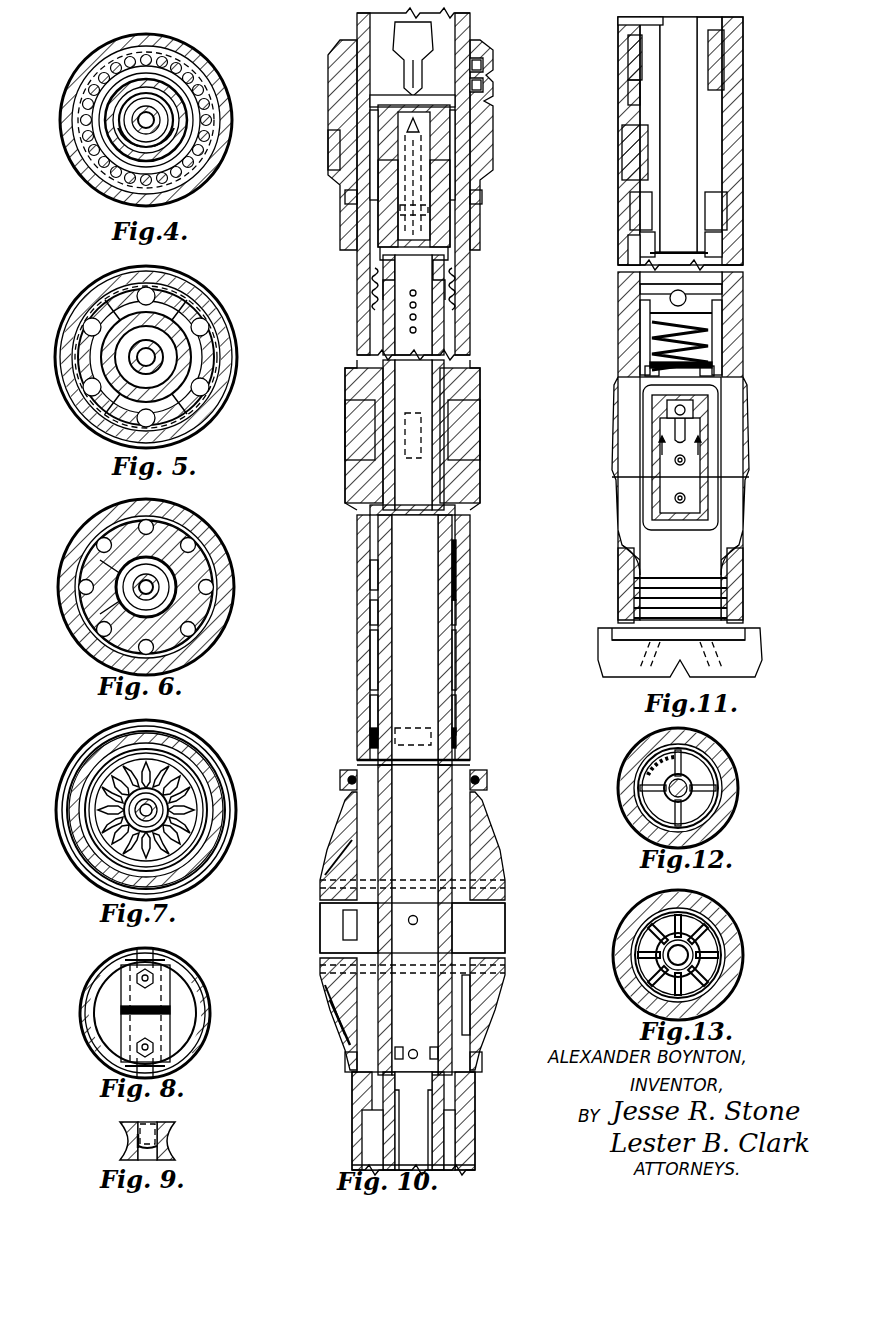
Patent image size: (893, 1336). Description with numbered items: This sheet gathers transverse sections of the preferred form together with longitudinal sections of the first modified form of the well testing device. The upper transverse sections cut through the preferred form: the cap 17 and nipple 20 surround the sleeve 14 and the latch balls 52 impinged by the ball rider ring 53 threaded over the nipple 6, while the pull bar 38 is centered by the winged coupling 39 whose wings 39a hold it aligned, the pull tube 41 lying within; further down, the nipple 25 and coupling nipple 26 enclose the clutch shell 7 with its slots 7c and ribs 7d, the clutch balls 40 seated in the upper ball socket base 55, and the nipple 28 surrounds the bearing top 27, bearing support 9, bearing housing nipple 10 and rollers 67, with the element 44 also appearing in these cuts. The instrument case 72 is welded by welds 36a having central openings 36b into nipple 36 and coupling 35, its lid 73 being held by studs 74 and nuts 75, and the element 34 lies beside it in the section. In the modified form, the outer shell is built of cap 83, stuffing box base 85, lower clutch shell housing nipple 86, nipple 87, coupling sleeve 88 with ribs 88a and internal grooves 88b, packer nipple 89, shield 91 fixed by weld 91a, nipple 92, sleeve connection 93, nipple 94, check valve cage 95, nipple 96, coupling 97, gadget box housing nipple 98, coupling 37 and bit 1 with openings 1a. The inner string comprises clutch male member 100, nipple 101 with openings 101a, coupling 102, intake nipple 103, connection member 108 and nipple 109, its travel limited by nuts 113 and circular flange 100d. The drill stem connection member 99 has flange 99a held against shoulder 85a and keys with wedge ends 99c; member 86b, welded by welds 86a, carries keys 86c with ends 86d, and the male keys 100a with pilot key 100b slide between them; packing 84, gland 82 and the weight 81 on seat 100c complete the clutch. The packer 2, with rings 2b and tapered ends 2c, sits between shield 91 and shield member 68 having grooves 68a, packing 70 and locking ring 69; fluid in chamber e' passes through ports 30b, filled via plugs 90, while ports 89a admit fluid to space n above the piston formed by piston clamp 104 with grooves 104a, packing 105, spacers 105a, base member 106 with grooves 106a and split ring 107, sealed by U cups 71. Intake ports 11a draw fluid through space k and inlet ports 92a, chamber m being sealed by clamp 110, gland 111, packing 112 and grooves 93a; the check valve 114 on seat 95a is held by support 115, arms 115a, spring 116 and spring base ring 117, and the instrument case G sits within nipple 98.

In FIG. 11, the bit 1 is at (612, 652).
In FIG. 11, the openings of the bit 1a is at (715, 657).
In FIG. 10, the packer 2 is at (490, 928).
In FIG. 10, the reinforcing rings 2b is at (498, 883).
In FIG. 10, the tapered ends of the packer 2c is at (340, 866).
In FIG. 4, the nipple 6 is at (182, 142).
In FIG. 5, the clutch shell 7 is at (185, 340).
In FIG. 6, the clutch shell 7 is at (196, 547).
In FIG. 5, the slots 7c is at (208, 357).
In FIG. 5, the ribs 7d is at (205, 378).
In FIG. 11, the bearing support 9 is at (683, 437).
In FIG. 7, the bearing housing nipple 10 is at (192, 762).
In FIG. 10, the intake ports 11a is at (440, 1054).
In FIG. 4, the sleeve 14 is at (219, 158).
In FIG. 4, the cap 17 is at (118, 56).
In FIG. 4, the nipple 20 is at (210, 180).
In FIG. 5, the nipple 25 is at (190, 310).
In FIG. 5, the coupling nipple 26 is at (200, 405).
In FIG. 6, the coupling nipple 26 is at (225, 592).
In FIG. 7, the coupling nipple 26 is at (222, 843).
In FIG. 7, the bearing top 27 is at (108, 768).
In FIG. 7, the nipple 28 is at (212, 813).
In FIG. 10, the ports 30b is at (343, 928).
In FIG. 8, the hatched crescent 34 is at (95, 1009).
In FIG. 8, the coupling 35 is at (82, 988).
In FIG. 9, the coupling 35 is at (168, 1128).
In FIG. 9, the nipple 36 is at (120, 1145).
In FIG. 8, the welds 36a is at (120, 963).
In FIG. 9, the welds 36a is at (172, 1138).
In FIG. 8, the central openings 36b is at (160, 955).
In FIG. 9, the central openings 36b is at (122, 1136).
In FIG. 11, the coupling 37 is at (728, 581).
In FIG. 4, the pull bar 38 is at (106, 154).
In FIG. 7, the pull bar 38 is at (130, 820).
In FIG. 4, the winged coupling 39 is at (213, 78).
In FIG. 7, the winged coupling 39 is at (125, 800).
In FIG. 4, the wings 39a is at (112, 86).
In FIG. 6, the clutch balls 40 is at (196, 627).
In FIG. 4, the pull tube 41 is at (142, 124).
In FIG. 5, the pull tube 41 is at (140, 350).
In FIG. 6, the pull tube 41 is at (118, 608).
In FIG. 7, the pull tube 41 is at (90, 866).
In FIG. 5, the spoke 44 is at (130, 370).
In FIG. 6, the spoke 44 is at (100, 556).
In FIG. 4, the latch balls 52 is at (176, 52).
In FIG. 4, the ball rider ring 53 is at (198, 113).
In FIG. 6, the upper ball socket base 55 is at (210, 563).
In FIG. 7, the rollers 67 is at (186, 793).
In FIG. 10, the shield member 68 is at (478, 1012).
In FIG. 10, the grooves 68a is at (335, 1015).
In FIG. 10, the locking ring 69 is at (482, 1062).
In FIG. 10, the packing 70 is at (345, 1060).
In FIG. 10, the U cups 71 is at (470, 1000).
In FIG. 9, the instrument case 72 is at (172, 1152).
In FIG. 8, the lid 73 is at (148, 1029).
In FIG. 8, the studs 74 is at (137, 1046).
In FIG. 8, the nuts 75 is at (157, 979).
In FIG. 10, the weight 81 is at (434, 28).
In FIG. 10, the gland 82 is at (482, 48).
In FIG. 10, the cap 83 is at (486, 67).
In FIG. 10, the packing 84 is at (488, 90).
In FIG. 10, the stuffing box base 85 is at (452, 120).
In FIG. 10, the shoulder 85a is at (372, 104).
In FIG. 10, the lower clutch shell housing nipple 86 is at (450, 165).
In FIG. 13, the lower clutch shell housing nipple 86 is at (718, 914).
In FIG. 10, the welds 86a is at (484, 196).
In FIG. 10, the member 86b is at (345, 192).
In FIG. 13, the member 86b is at (722, 946).
In FIG. 13, the keys 86c is at (700, 968).
In FIG. 10, the wedge shaped lower ends 86d is at (430, 223).
In FIG. 10, the nipple 87 is at (462, 285).
In FIG. 10, the coupling sleeve 88 is at (462, 407).
In FIG. 10, the ribs 88a is at (478, 441).
In FIG. 10, the internal grooves 88b is at (362, 433).
In FIG. 10, the packer nipple 89 is at (460, 652).
In FIG. 10, the ports 89a is at (458, 514).
In FIG. 10, the plugs 90 is at (340, 783).
In FIG. 10, the packer upper end shield 91 is at (455, 820).
In FIG. 10, the weld 91a is at (470, 763).
In FIG. 10, the nipple 92 is at (472, 1150).
In FIG. 11, the nipple 92 is at (735, 27).
In FIG. 10, the inlet ports 92a is at (465, 1128).
In FIG. 11, the sleeve connection 93 is at (730, 143).
In FIG. 11, the grooves 93a is at (648, 155).
In FIG. 11, the nipple 94 is at (735, 222).
In FIG. 12, the nipple 94 is at (715, 748).
In FIG. 11, the check valve cage 95 is at (745, 340).
In FIG. 12, the check valve cage 95 is at (722, 772).
In FIG. 11, the valve seat 95a is at (668, 296).
In FIG. 11, the nipple 96 is at (730, 368).
In FIG. 11, the coupling 97 is at (740, 445).
In FIG. 11, the gadget box housing nipple 98 is at (743, 514).
In FIG. 10, the drill stem connection member 99 is at (357, 27).
In FIG. 10, the external flange 99a is at (370, 118).
In FIG. 10, the wedge shaped ends 99c is at (402, 180).
In FIG. 10, the clutch male member 100 is at (345, 133).
In FIG. 13, the clutch male member 100 is at (640, 955).
In FIG. 13, the keys 100a is at (715, 990).
In FIG. 10, the long key 100b is at (450, 128).
In FIG. 10, the seat 100c is at (345, 86).
In FIG. 10, the circular flange 100d is at (458, 256).
In FIG. 10, the nipple 101 is at (385, 337).
In FIG. 10, the openings 101a is at (380, 308).
In FIG. 10, the coupling 102 is at (380, 545).
In FIG. 10, the intake nipple 103 is at (380, 568).
In FIG. 10, the piston clamp 104 is at (372, 593).
In FIG. 10, the grooves 104a is at (372, 628).
In FIG. 10, the packing 105 is at (372, 677).
In FIG. 10, the spacers 105a is at (456, 686).
In FIG. 10, the base member 106 is at (456, 719).
In FIG. 10, the grooves 106a is at (372, 720).
In FIG. 10, the split ring 107 is at (358, 757).
In FIG. 10, the connection member 108 is at (362, 1118).
In FIG. 10, the nipple 109 is at (362, 1158).
In FIG. 11, the nipple 109 is at (650, 26).
In FIG. 11, the clamp 110 is at (635, 50).
In FIG. 11, the gland 111 is at (720, 93).
In FIG. 11, the packing 112 is at (640, 105).
In FIG. 11, the nuts 113 is at (632, 208).
In FIG. 11, the check valve 114 is at (740, 282).
In FIG. 12, the check valve 114 is at (645, 805).
In FIG. 11, the check valve support 115 is at (640, 318).
In FIG. 11, the arms 115a is at (650, 328).
In FIG. 12, the arms 115a is at (718, 812).
In FIG. 11, the coiled spring 116 is at (650, 364).
In FIG. 12, the coiled spring 116 is at (652, 770).
In FIG. 11, the spring base ring 117 is at (645, 375).
In FIG. 11, the instrument case G is at (660, 470).
In FIG. 11, the frame h is at (720, 463).
In FIG. 10, the annular space k is at (370, 1140).
In FIG. 11, the chamber m is at (640, 249).
In FIG. 10, the annular space n is at (455, 569).
In FIG. 10, the chamber e' is at (456, 920).